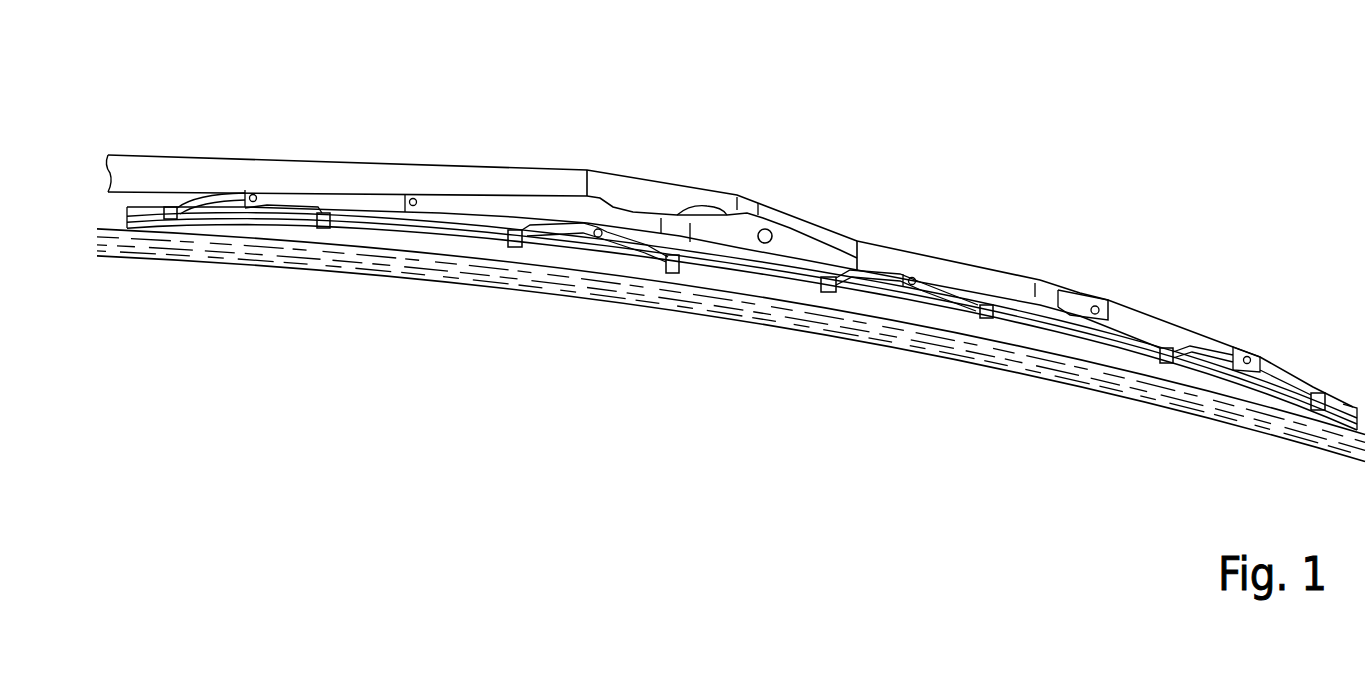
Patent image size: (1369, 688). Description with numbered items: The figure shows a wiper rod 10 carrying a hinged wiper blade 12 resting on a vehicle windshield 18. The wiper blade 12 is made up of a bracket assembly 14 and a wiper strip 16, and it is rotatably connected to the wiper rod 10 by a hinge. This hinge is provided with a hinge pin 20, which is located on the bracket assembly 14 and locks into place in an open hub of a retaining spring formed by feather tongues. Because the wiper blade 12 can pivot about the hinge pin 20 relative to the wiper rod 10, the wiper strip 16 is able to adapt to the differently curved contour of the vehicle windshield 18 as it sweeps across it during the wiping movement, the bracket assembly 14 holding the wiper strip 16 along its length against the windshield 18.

The wiper rod 10 is at (570, 183).
The wiper blade 12 is at (930, 225).
The bracket assembly 14 is at (1035, 295).
The wiper strip 16 is at (1132, 362).
The vehicle windshield 18 is at (622, 293).
The hinge pin 20 is at (768, 229).